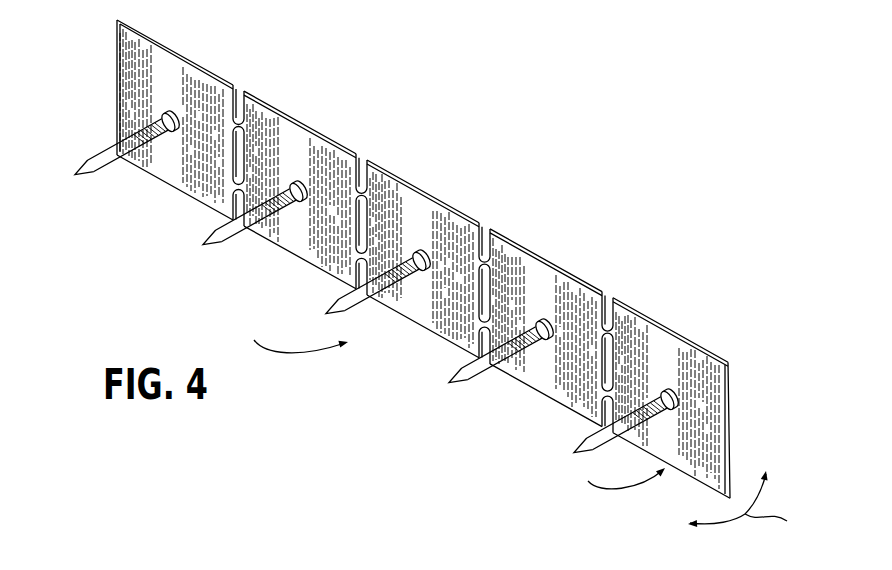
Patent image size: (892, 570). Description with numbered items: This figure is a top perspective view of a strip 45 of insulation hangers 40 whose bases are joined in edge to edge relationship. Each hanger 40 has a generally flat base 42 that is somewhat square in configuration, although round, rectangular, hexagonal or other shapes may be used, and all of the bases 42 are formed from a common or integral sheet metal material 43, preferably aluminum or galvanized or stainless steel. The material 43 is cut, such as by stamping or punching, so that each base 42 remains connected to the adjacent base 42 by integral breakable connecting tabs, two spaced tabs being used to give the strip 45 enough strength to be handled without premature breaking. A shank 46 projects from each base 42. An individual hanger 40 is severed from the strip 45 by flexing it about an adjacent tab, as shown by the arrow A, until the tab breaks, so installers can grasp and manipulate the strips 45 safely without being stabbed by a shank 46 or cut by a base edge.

The hanger 40 is at (185, 53).
The base 42 is at (116, 52).
The sheet metal material 43 is at (295, 336).
The strip 45 is at (619, 475).
The shank 46 is at (108, 174).
The arrow A is at (745, 500).